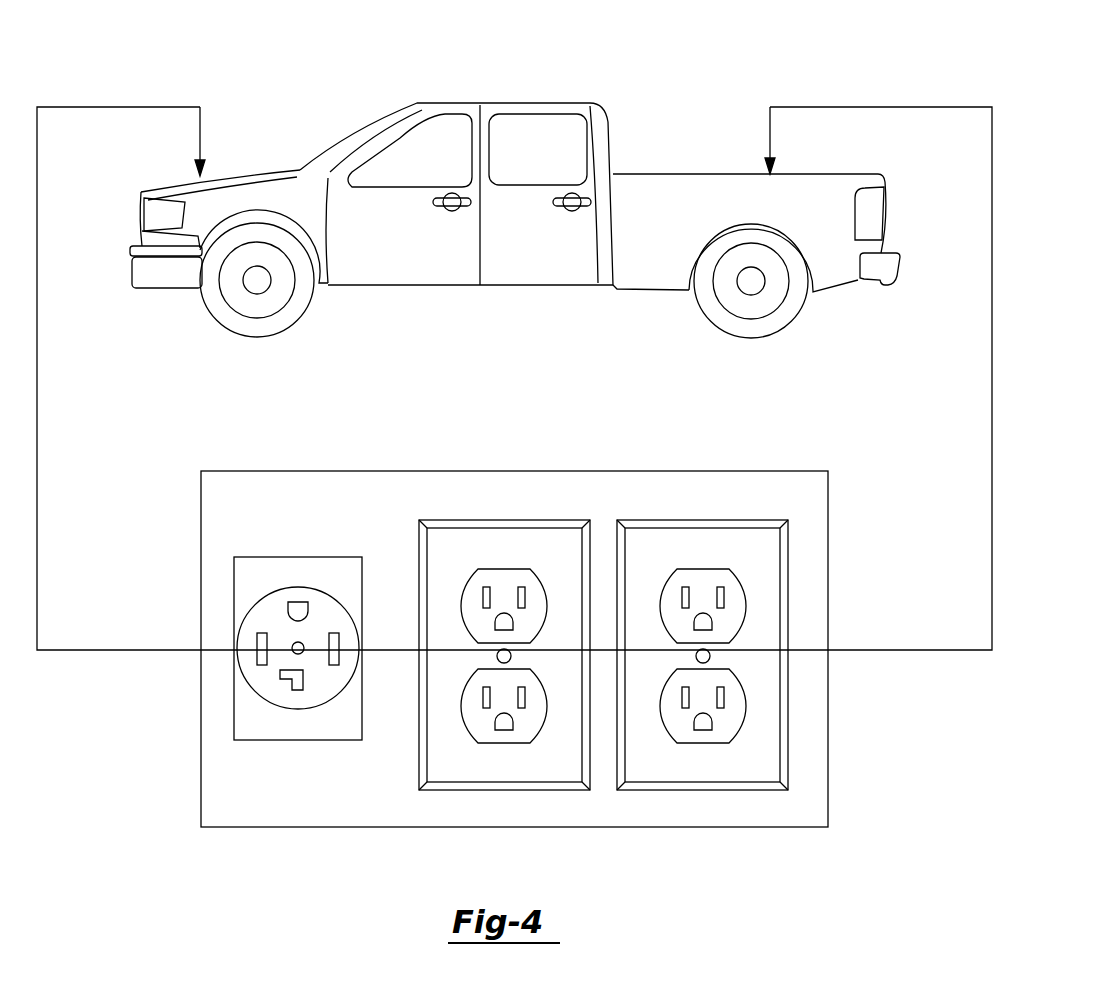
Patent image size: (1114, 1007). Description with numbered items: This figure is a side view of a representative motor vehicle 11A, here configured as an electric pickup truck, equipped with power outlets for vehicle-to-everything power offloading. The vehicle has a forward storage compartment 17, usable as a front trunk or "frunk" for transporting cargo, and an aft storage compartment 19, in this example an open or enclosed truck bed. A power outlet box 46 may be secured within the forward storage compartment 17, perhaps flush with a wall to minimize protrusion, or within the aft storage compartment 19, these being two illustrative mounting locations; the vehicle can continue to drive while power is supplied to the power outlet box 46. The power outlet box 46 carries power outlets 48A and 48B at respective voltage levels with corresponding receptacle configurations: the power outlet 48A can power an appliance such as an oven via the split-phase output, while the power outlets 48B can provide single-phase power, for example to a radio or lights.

The motor vehicle 11A is at (1003, 72).
The forward storage compartment 17 is at (253, 170).
The aft storage compartment 19 is at (690, 173).
The power outlet box 46 is at (828, 533).
The power outlet 48A is at (298, 741).
The power outlets 48B is at (504, 791).